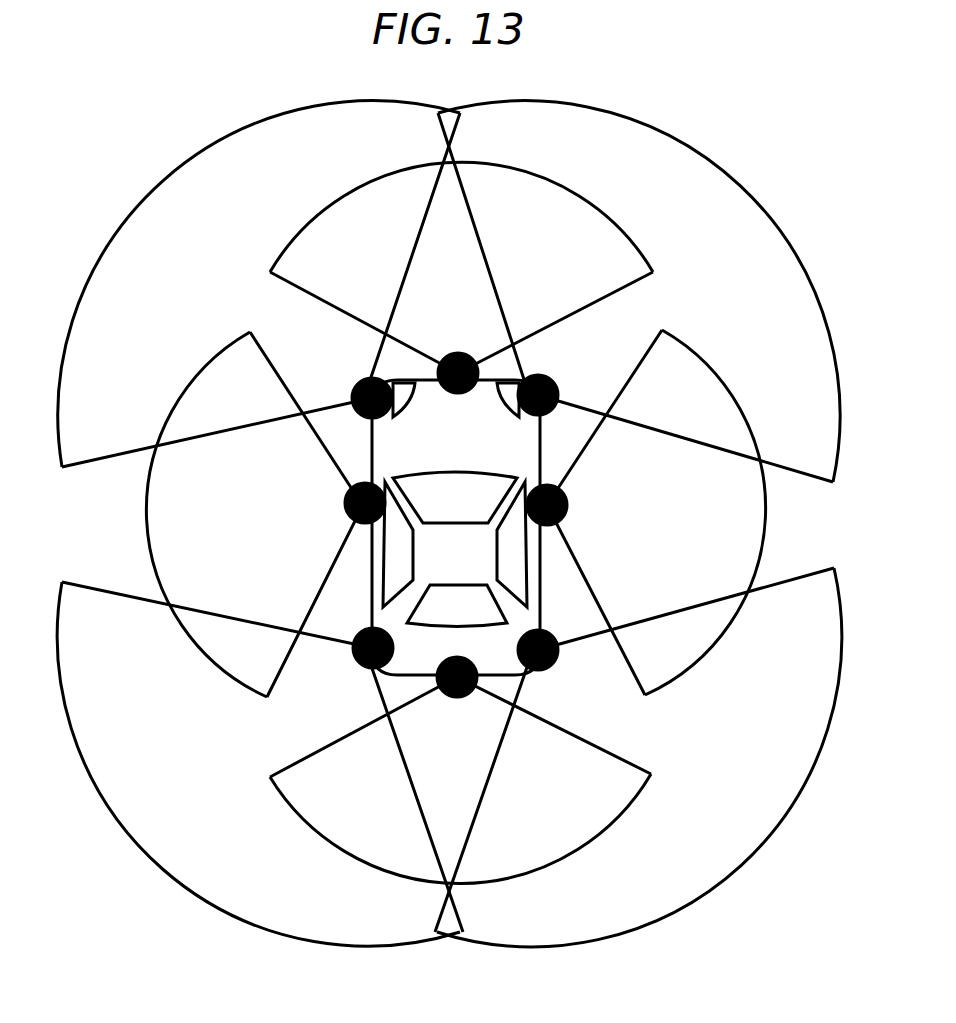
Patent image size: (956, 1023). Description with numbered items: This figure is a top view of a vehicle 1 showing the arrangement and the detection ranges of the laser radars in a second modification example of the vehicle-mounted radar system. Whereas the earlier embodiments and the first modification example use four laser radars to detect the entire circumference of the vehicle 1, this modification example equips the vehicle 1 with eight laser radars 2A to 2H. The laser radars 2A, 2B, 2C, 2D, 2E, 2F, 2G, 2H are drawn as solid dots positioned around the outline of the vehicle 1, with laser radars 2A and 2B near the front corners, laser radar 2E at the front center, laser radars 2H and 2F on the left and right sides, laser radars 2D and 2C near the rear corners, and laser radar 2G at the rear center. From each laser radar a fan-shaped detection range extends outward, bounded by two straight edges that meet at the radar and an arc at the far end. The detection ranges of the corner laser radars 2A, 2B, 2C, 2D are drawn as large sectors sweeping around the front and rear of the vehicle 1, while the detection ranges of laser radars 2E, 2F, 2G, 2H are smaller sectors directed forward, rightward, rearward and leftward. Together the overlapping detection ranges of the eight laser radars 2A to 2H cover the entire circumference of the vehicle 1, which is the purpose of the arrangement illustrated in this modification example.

The vehicle 1 is at (370, 583).
The laser radar 2A is at (353, 383).
The laser radar 2B is at (557, 378).
The laser radar 2C is at (553, 664).
The laser radar 2D is at (357, 662).
The laser radar 2E is at (452, 352).
The laser radar 2F is at (566, 500).
The laser radar 2G is at (455, 695).
The laser radar 2H is at (346, 505).